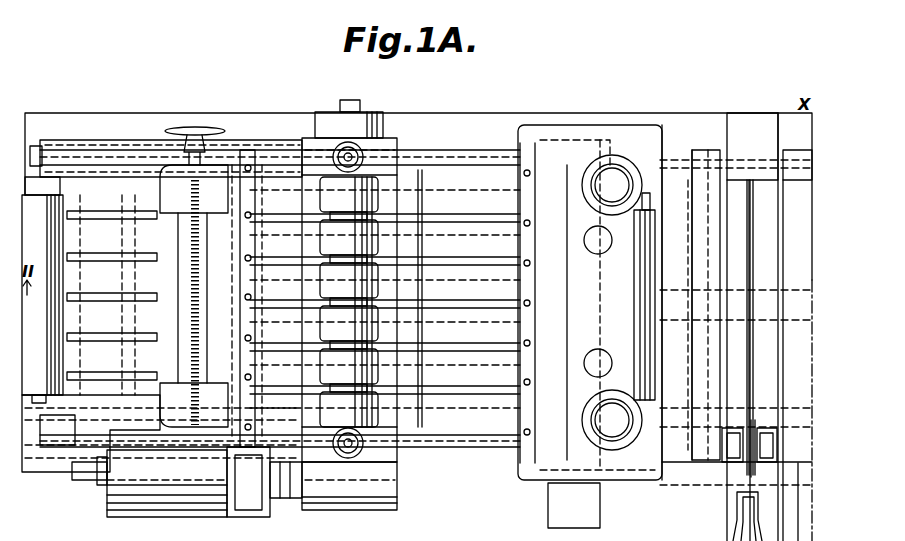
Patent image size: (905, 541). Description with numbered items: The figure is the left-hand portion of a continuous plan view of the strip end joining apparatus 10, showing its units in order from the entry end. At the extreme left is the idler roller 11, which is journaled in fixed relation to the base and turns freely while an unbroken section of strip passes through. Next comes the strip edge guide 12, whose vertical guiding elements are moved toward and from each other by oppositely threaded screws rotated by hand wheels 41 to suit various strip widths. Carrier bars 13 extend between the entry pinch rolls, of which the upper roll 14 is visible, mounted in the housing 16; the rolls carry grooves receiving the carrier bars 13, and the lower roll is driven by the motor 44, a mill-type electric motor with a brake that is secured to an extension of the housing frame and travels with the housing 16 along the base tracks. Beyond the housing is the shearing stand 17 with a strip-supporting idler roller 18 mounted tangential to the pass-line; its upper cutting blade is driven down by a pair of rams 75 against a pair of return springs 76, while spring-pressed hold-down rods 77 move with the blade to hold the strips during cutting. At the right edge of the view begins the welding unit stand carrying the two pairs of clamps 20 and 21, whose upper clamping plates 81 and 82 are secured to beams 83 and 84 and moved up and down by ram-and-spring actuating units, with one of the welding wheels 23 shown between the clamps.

The continuous strip forming apparatus 10 is at (462, 95).
The idler roller 11 is at (50, 317).
The strip edge guide 12 is at (177, 207).
The carrier bars 13 is at (422, 257).
The entry pinch roll 14 is at (372, 356).
The housing 16 is at (303, 138).
The shearing stand 17 is at (592, 133).
The strip-supporting idler roller 18 is at (657, 257).
The clamp 20 is at (702, 148).
The clamp 21 is at (788, 147).
The welding wheel 23 is at (748, 472).
The hand wheel 41 is at (187, 127).
The motor 44 is at (180, 500).
The ram 75 is at (588, 163).
The spring 76 is at (585, 363).
The hold-down rod 77 is at (625, 330).
The upper clamping plate 81 is at (738, 328).
The upper clamping plate 82 is at (769, 414).
The beam 83 is at (690, 180).
The beam 84 is at (798, 227).